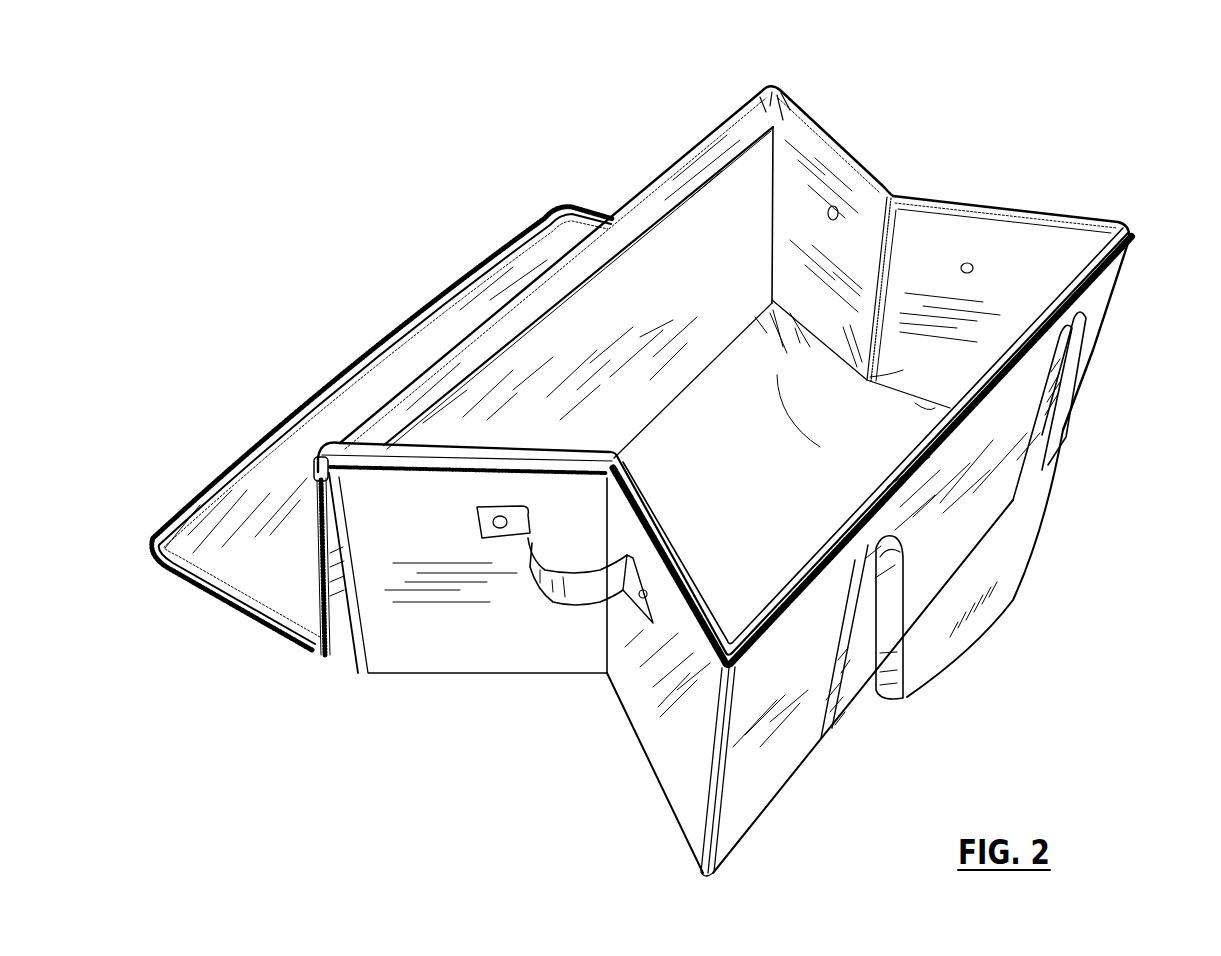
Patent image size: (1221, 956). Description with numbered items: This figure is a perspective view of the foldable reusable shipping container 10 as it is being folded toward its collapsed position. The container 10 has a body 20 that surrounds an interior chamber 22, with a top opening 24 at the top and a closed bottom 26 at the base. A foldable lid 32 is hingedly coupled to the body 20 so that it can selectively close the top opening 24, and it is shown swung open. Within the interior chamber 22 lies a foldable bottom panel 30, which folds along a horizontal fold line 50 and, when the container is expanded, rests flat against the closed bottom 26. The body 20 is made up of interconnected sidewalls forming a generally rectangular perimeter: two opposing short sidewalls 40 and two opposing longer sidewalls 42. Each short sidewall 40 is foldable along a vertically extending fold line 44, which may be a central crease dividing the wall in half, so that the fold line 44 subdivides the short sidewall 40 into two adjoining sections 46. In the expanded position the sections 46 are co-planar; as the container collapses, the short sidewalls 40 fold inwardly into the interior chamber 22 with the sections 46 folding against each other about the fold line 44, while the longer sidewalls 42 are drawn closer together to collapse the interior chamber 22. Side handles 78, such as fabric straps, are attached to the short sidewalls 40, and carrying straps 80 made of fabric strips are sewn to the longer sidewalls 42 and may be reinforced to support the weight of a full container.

The foldable reusable shipping container 10 is at (313, 152).
The body 20 is at (1113, 333).
The interior chamber 22 is at (797, 464).
The top opening 24 is at (1018, 280).
The closed bottom 26 is at (690, 455).
The foldable bottom panel 30 is at (710, 226).
The foldable lid 32 is at (335, 620).
The short sidewall 40 is at (807, 192).
The longer sidewall 42 is at (632, 217).
The fold line 44 is at (884, 235).
The section 46 is at (440, 655).
The horizontal fold line 50 is at (750, 145).
The side handle 78 is at (555, 605).
The carrying strap 80 is at (957, 641).